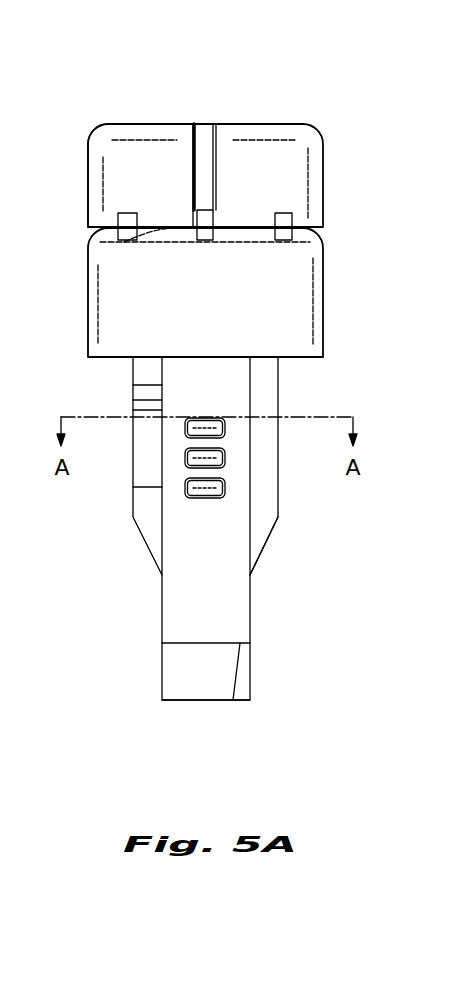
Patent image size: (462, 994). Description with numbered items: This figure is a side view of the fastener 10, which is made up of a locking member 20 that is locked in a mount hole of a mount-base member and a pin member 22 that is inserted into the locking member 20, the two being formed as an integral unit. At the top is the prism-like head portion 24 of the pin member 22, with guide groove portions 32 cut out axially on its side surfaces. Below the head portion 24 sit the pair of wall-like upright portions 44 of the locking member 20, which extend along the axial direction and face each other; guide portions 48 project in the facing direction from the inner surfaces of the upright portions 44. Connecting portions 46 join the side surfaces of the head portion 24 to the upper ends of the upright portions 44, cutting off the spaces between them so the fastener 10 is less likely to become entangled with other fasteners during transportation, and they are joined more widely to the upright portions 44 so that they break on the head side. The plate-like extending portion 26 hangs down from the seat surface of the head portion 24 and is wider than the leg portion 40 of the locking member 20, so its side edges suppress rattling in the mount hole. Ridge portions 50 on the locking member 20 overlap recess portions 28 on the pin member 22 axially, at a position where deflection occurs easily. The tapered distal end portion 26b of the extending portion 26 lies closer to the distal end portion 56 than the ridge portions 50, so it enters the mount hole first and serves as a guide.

The fastener 10 is at (272, 720).
The locking member 20 is at (228, 580).
The pin member 22 is at (270, 160).
The head portion 24 is at (145, 158).
The extending portion 26 is at (267, 444).
The distal end portion of the extending portion 26b is at (267, 543).
The recess portions 28 is at (143, 447).
The guide groove portions 32 is at (205, 172).
The leg portion 40 is at (177, 533).
The upright portions 44 is at (283, 288).
The connecting portions 46 is at (127, 214).
The guide portions 48 is at (205, 220).
The ridge portions 50 is at (200, 458).
The distal end portion 56 is at (207, 703).